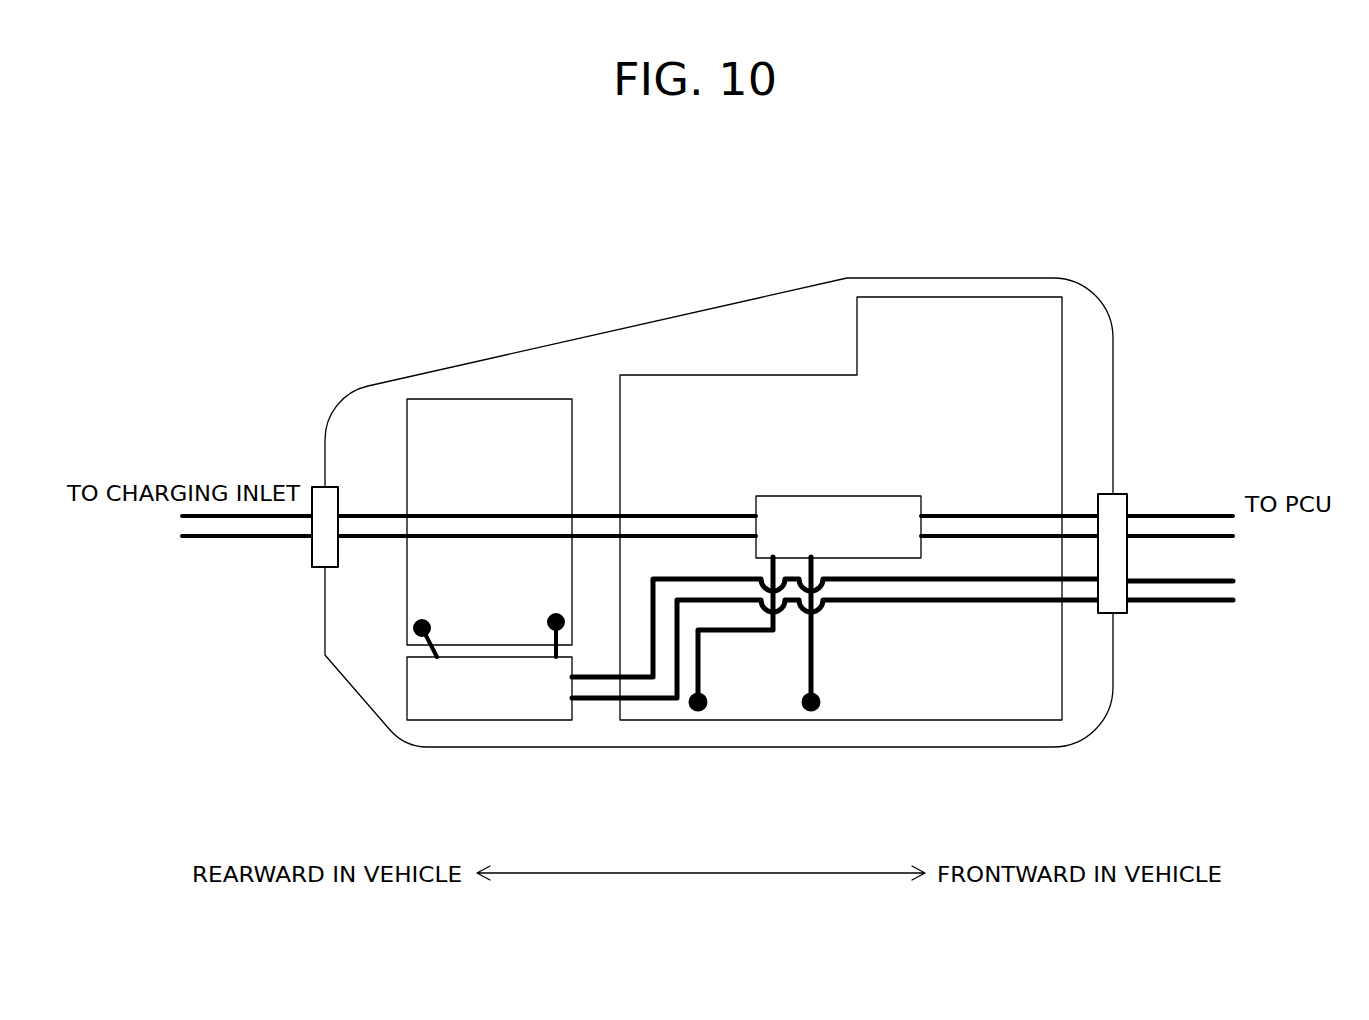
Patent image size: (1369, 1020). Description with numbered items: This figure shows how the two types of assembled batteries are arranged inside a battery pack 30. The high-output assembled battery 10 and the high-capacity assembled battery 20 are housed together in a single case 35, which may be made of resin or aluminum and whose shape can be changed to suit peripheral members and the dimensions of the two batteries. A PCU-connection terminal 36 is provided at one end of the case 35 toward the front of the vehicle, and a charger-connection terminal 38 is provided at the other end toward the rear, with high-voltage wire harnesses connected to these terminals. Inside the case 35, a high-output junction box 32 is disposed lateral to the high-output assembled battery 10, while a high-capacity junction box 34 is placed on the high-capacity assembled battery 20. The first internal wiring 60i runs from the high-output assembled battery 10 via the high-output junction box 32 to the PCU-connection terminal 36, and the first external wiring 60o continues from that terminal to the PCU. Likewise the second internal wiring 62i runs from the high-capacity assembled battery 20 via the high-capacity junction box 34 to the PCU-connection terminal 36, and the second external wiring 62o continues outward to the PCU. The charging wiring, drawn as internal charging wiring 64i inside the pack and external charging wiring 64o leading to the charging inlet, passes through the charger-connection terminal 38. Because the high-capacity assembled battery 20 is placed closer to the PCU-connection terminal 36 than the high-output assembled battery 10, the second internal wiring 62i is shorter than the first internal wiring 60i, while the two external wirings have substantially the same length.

The high-output assembled battery 10 is at (456, 399).
The high-capacity assembled battery 20 is at (742, 375).
The battery pack 30 is at (365, 276).
The high-output junction box 32 is at (507, 720).
The high-capacity junction box 34 is at (837, 496).
The case 35 is at (890, 279).
The PCU-connection terminal 36 is at (1112, 513).
The charger-connection terminal 38 is at (317, 552).
The first internal wiring 60i is at (905, 583).
The first external wiring 60o is at (1220, 600).
The second internal wiring 62i is at (1007, 537).
The second external wiring 62o is at (1208, 538).
The internal charging wiring 64i is at (517, 535).
The external charging wiring 64o is at (254, 517).